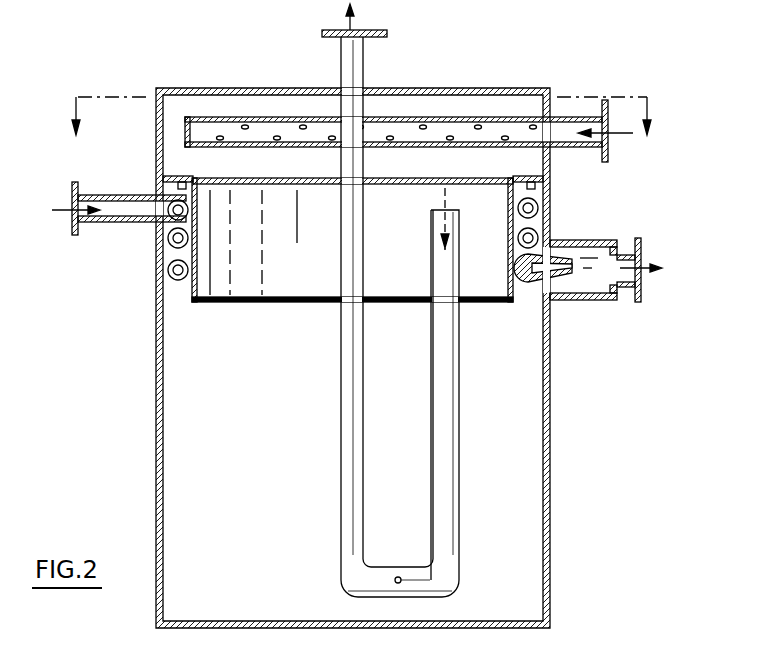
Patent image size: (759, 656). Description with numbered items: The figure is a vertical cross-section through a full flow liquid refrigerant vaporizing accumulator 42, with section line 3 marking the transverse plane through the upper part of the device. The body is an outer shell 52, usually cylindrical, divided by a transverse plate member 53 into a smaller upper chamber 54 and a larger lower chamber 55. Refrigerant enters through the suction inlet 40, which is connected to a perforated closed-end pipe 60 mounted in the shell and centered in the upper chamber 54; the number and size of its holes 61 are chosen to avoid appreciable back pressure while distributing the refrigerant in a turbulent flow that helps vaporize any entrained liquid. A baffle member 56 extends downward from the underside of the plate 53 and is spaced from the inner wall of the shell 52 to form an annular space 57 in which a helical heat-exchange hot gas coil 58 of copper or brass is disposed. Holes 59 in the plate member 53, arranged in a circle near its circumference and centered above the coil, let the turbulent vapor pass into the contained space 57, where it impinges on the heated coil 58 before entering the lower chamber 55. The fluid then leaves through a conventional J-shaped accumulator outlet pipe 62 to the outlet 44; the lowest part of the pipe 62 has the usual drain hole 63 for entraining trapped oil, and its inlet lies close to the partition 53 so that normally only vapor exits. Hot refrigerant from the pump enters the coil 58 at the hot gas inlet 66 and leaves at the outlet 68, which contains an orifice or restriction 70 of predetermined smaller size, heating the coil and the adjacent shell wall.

The section line 3- 3 is at (360, 119).
The suction inlet 40 is at (610, 143).
The liquid refrigerant vaporizing accumulator 42 is at (575, 494).
The outlet 44 is at (340, 72).
The outer shell 52 is at (550, 575).
The transverse plate member 53 is at (463, 179).
The upper chamber 54 is at (213, 108).
The lower chamber 55 is at (538, 390).
The baffle member 56 is at (197, 212).
The annular space 57 is at (178, 296).
The helical heat-exchange hot gas coil 58 is at (170, 270).
The holes 59 is at (182, 178).
The perforated closed-end pipe 60 is at (442, 127).
The holes 61 is at (478, 125).
The J-shaped accumulator outlet pipe 62 is at (342, 410).
The drain hole 63 is at (398, 583).
The hot gas inlet 66 is at (75, 212).
The outlet 68 is at (640, 268).
The orifice or restriction 70 is at (565, 262).